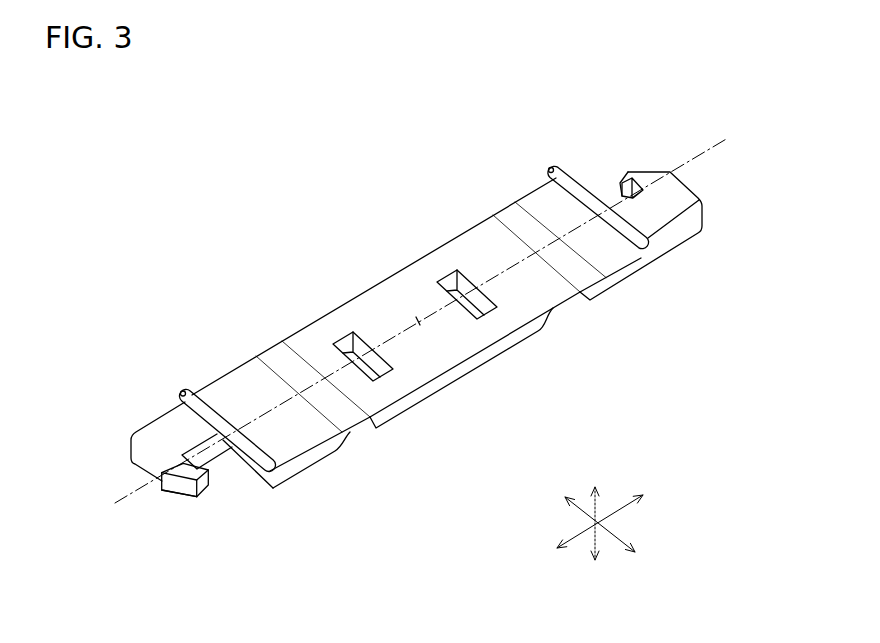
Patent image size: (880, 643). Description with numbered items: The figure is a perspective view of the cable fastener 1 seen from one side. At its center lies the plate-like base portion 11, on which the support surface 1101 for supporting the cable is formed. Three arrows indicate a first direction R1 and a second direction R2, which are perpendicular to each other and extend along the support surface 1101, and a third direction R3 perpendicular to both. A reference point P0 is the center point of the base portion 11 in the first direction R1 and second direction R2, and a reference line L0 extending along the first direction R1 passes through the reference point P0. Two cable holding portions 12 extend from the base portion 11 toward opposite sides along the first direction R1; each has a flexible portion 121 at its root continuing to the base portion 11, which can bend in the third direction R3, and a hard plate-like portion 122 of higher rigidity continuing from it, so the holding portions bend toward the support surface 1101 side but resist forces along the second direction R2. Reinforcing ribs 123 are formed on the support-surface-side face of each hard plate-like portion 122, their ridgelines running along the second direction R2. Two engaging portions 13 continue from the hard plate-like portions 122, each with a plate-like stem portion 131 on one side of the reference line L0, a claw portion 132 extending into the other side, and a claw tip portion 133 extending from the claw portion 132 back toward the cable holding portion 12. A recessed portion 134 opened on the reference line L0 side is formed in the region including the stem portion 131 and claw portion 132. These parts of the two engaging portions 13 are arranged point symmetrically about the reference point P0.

The cable fastener 1 is at (270, 247).
The base portion 11 is at (386, 310).
The support surface 1101 is at (393, 297).
The cable holding portions 12 is at (376, 328).
The flexible portion 121 is at (478, 214).
The hard plate-like portion 122 is at (530, 192).
The reinforcing ribs 123 is at (567, 168).
The engaging portions 13 is at (420, 348).
The stem portion 131 is at (706, 232).
The claw portion 132 is at (647, 170).
The claw tip portion 133 is at (621, 183).
The recessed portion 134 is at (173, 533).
The reference point P0 is at (418, 320).
The reference line L0 is at (437, 309).
The first direction R1 is at (613, 511).
The second direction R2 is at (612, 540).
The third direction R3 is at (599, 510).